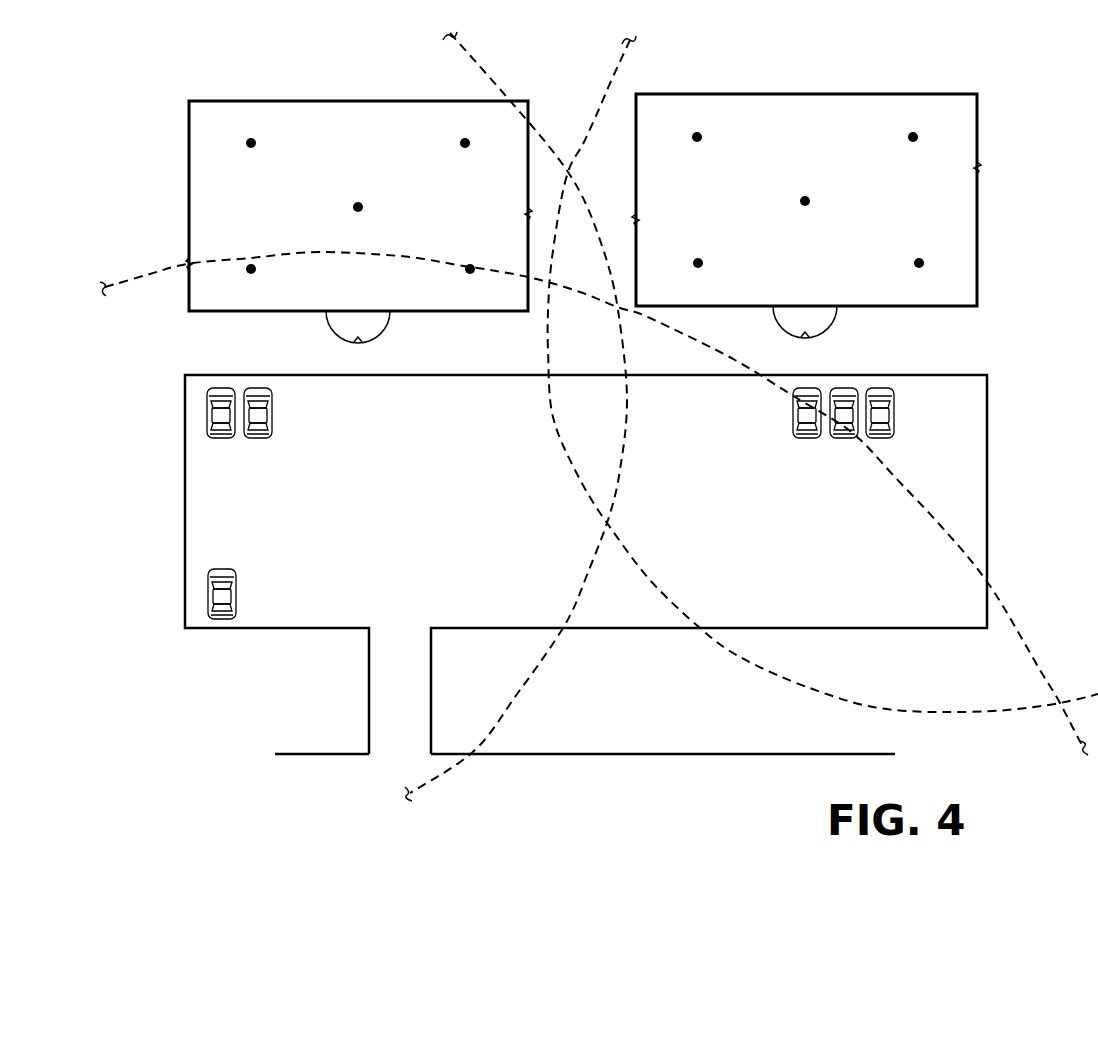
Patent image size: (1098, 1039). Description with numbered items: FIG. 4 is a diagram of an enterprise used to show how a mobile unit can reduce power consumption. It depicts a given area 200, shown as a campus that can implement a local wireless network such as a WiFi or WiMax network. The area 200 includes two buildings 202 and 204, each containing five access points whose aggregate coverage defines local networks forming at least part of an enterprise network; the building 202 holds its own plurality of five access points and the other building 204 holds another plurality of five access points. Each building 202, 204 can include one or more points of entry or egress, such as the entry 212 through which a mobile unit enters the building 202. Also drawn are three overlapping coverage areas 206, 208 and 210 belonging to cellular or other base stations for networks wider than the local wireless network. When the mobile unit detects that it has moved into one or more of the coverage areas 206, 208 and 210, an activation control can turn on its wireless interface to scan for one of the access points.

The area 200 is at (1012, 90).
The building 202 is at (367, 100).
The building 204 is at (813, 93).
The coverage area 206 is at (627, 423).
The coverage area 208 is at (892, 475).
The coverage area 210 is at (560, 418).
The entry 212 is at (187, 262).